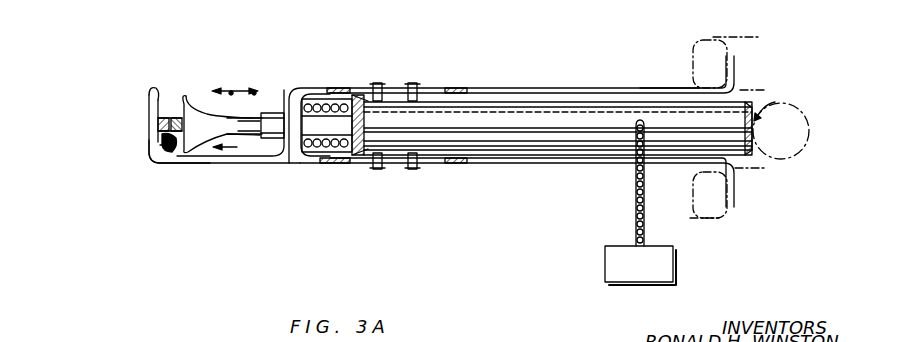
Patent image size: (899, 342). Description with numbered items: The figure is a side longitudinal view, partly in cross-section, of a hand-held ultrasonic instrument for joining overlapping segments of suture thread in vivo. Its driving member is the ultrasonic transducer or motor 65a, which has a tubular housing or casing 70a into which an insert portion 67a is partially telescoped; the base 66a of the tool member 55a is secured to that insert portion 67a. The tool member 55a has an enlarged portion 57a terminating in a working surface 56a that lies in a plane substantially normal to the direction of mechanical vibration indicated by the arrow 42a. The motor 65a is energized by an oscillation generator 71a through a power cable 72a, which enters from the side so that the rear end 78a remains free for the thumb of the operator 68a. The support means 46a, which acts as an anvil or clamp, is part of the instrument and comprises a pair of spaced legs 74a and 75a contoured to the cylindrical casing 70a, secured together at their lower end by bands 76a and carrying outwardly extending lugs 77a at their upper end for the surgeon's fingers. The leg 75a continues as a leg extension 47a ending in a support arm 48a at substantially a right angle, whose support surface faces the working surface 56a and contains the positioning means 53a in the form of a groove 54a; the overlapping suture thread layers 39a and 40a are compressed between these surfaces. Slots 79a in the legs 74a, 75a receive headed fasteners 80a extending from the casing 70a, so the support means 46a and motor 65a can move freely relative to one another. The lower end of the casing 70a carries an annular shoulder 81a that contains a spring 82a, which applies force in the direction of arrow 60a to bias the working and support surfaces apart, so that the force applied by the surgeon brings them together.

The suture thread layer 39a is at (173, 114).
The suture thread layer 40a is at (153, 137).
The arrow 42a is at (237, 88).
The support means 46a is at (150, 178).
The leg extension 47a is at (275, 164).
The support arm 48a is at (149, 117).
The positioning means 53a is at (157, 92).
The groove 54a is at (160, 145).
The tool member 55a is at (249, 128).
The working surface 56a is at (172, 153).
The enlarged portion 57a is at (187, 98).
The arrow 60a is at (232, 152).
The ultrasonic transducer or motor 65a is at (652, 92).
The base 66a is at (288, 100).
The insert portion 67a is at (312, 144).
The operator 68a is at (783, 84).
The tubular housing or casing 70a is at (597, 110).
The oscillation generator 71a is at (677, 283).
The power cable 72a is at (636, 217).
The leg 74a is at (540, 87).
The leg 75a is at (533, 168).
The band 76a is at (290, 92).
The lug 77a is at (729, 55).
The rear end 78a is at (764, 129).
The slot 79a is at (448, 86).
The headed fastener 80a is at (413, 84).
The annular shoulder 81a is at (357, 98).
The spring 82a is at (330, 150).